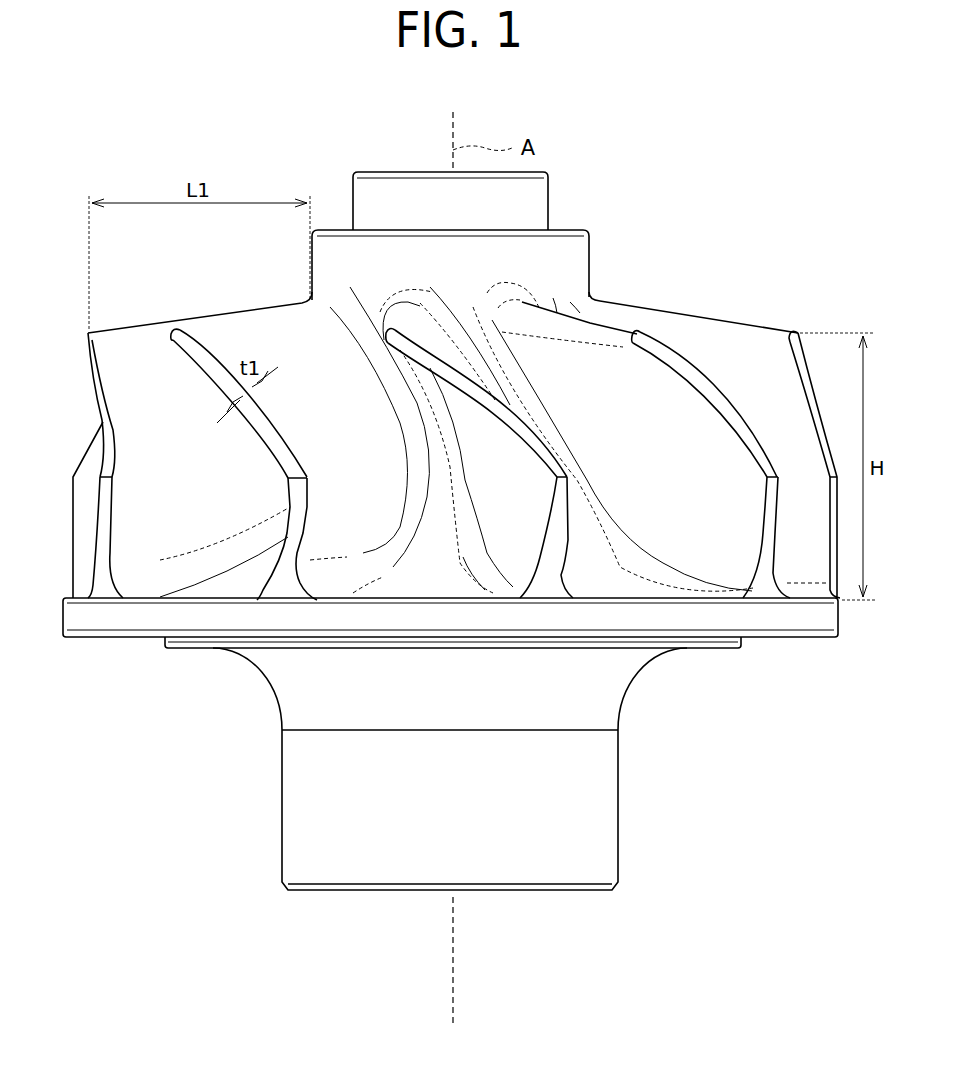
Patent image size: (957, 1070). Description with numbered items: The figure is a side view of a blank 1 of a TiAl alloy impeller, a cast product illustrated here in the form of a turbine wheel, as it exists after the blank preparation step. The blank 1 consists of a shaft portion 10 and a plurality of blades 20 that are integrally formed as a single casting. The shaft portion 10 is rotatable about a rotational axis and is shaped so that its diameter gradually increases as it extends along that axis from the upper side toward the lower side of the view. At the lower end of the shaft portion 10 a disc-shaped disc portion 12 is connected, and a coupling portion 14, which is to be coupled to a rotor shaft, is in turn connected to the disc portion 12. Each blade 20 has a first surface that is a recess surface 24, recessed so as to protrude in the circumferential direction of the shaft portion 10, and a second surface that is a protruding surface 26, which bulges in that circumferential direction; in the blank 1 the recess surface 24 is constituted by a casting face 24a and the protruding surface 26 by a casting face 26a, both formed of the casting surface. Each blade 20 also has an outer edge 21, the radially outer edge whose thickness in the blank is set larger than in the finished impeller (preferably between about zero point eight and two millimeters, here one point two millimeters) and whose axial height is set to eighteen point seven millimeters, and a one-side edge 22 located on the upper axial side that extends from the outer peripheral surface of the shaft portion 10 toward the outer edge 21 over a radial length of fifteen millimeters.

The blank 1 is at (588, 198).
The shaft portion 10 is at (563, 250).
The disc portion 12 is at (793, 620).
The coupling portion 14 is at (575, 800).
The blade 20 is at (293, 315).
The outer edge 21 is at (202, 355).
The one-side edge 22 is at (118, 325).
The recess surface 24 is at (720, 520).
The casting face 24a is at (660, 520).
The protruding surface 26 is at (148, 520).
The casting face 26a is at (215, 518).